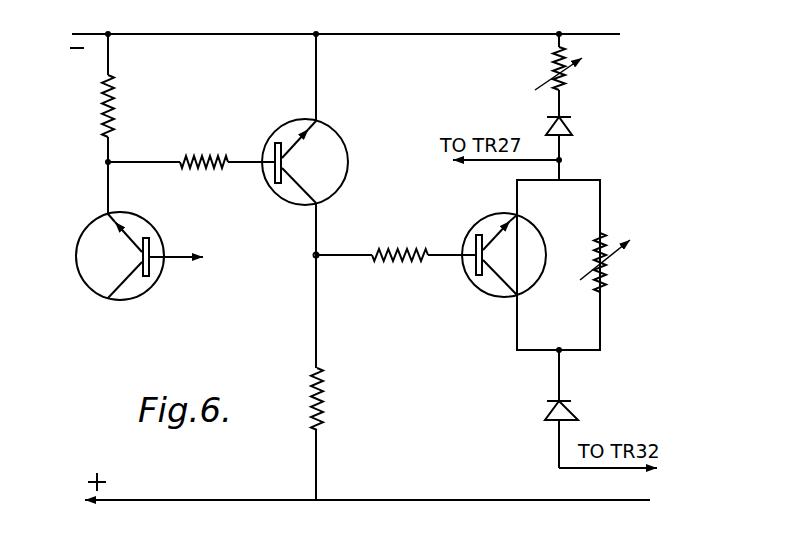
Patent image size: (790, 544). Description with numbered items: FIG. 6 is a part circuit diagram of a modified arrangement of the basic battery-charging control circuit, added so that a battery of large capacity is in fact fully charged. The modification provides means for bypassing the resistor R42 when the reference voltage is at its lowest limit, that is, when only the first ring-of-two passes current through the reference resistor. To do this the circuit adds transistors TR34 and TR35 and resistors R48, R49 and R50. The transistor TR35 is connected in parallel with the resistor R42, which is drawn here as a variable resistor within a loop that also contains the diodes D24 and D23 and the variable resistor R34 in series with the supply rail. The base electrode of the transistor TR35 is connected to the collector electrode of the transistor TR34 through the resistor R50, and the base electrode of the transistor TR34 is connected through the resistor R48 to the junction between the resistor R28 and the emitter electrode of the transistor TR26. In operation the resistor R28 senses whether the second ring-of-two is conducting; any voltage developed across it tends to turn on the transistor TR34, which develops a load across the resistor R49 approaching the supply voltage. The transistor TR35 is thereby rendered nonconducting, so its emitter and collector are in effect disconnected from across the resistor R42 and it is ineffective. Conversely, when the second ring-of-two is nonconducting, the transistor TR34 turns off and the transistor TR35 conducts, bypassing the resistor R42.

The resistor R28 is at (112, 106).
The resistor R48 is at (206, 160).
The transistor TR34 is at (327, 142).
The transistor TR26 is at (133, 294).
The resistor R50 is at (415, 241).
The transistor TR35 is at (483, 292).
The resistor R49 is at (322, 400).
The variable resistor R34 is at (562, 84).
The diode D24 is at (571, 131).
The resistor R42 is at (607, 289).
The diode D23 is at (579, 410).